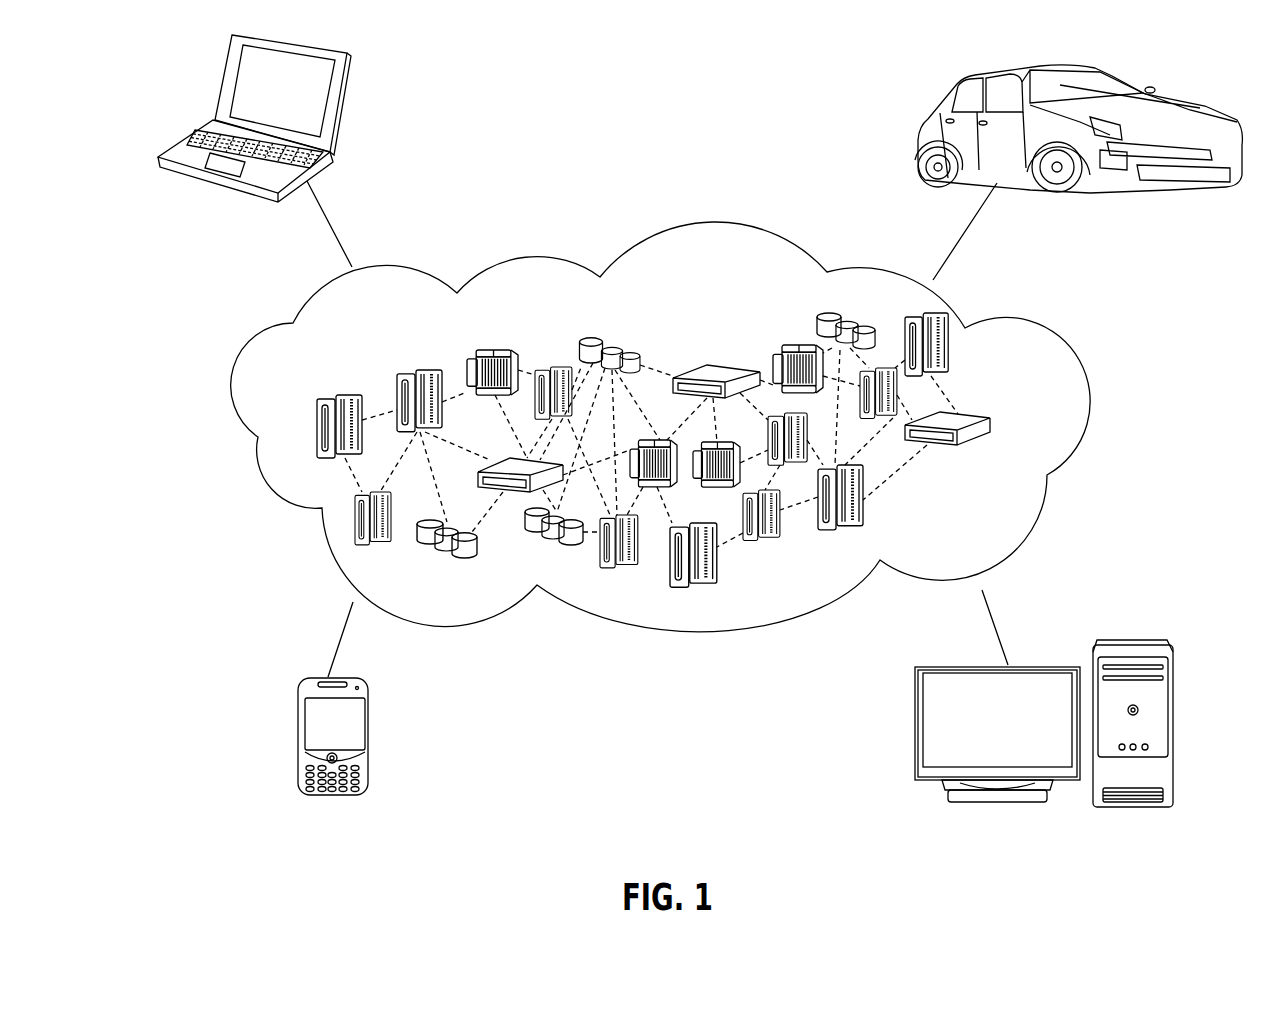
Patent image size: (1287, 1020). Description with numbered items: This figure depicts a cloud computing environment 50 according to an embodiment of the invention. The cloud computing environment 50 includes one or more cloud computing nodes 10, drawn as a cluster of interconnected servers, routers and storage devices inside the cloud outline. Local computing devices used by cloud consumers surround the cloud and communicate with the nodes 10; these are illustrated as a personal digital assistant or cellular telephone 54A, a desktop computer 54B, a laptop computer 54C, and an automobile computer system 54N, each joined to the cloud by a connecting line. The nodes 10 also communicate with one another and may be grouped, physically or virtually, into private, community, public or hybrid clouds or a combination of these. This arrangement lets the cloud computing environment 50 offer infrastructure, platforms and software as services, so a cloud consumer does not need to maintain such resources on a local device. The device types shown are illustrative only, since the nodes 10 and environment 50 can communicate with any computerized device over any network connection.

The cloud computing nodes 10 is at (1030, 425).
The cloud computing environment 50 is at (1057, 340).
The personal digital assistant or cellular telephone 54A is at (298, 740).
The desktop computer 54B is at (1138, 640).
The laptop computer 54C is at (345, 103).
The automobile computer system 54N is at (922, 118).